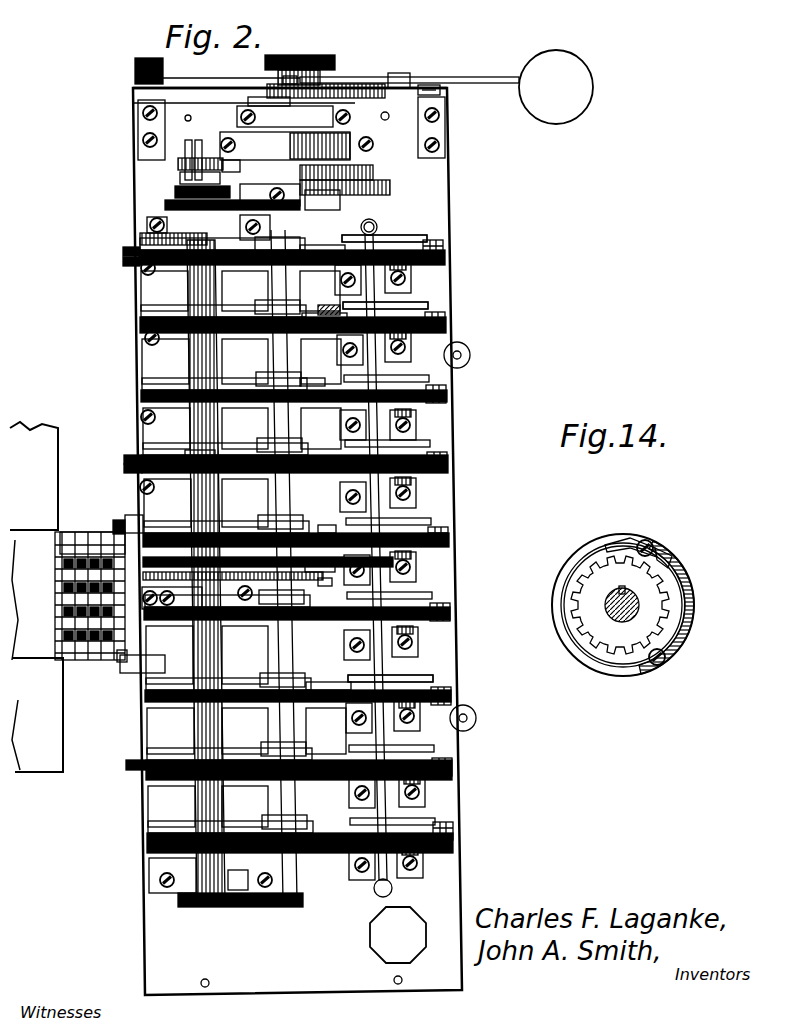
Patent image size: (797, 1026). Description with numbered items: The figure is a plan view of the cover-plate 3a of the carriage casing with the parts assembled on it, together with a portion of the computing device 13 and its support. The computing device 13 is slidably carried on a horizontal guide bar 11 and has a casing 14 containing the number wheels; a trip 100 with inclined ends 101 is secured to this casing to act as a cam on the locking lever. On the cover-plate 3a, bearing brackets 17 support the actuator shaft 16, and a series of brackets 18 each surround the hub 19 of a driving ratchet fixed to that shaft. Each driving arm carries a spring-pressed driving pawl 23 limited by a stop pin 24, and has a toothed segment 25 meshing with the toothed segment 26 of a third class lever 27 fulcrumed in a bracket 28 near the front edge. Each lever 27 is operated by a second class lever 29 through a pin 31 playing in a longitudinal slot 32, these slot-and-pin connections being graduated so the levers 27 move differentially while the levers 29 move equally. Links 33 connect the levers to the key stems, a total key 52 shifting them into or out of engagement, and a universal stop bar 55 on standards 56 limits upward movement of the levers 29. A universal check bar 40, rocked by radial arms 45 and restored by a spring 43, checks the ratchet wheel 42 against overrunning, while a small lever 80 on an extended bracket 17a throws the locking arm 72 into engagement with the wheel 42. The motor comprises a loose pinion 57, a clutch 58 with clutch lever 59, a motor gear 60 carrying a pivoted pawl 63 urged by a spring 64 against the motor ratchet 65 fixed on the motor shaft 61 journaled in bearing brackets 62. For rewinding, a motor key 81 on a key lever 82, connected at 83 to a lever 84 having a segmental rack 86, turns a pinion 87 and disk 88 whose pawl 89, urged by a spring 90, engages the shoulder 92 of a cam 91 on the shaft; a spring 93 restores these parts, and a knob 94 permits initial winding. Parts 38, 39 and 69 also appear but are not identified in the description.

In FIG. 2, the cover-plate 3a is at (447, 212).
In FIG. 2, the horizontal guide bar 11 is at (36, 597).
In FIG. 2, the computing device 13 is at (90, 532).
In FIG. 2, the casing 14 is at (73, 596).
In FIG. 2, the actuator shaft 16 is at (195, 152).
In FIG. 2, the bearing brackets 17 is at (168, 205).
In FIG. 2, the bracket 17a is at (322, 528).
In FIG. 2, the brackets 18 is at (141, 278).
In FIG. 2, the hub 19 is at (190, 272).
In FIG. 2, the driving pawl 23 is at (123, 250).
In FIG. 2, the stop pin 24 is at (123, 262).
In FIG. 2, the toothed segment 25 is at (262, 252).
In FIG. 2, the toothed segment 26 is at (293, 327).
In FIG. 2, the third class lever 27 is at (375, 250).
In FIG. 2, the bracket 28 is at (412, 265).
In FIG. 2, the second class lever 29 is at (415, 240).
In FIG. 2, the pin 31 is at (370, 222).
In FIG. 2, the longitudinal slot 32 is at (329, 301).
In FIG. 2, the links 33 is at (445, 250).
In FIG. 2, the bracket 38 is at (147, 228).
In FIG. 2, the ratchet 39 is at (150, 235).
In FIG. 2, the universal check bar 40 is at (290, 440).
In FIG. 2, the ratchet wheel 42 is at (172, 598).
In FIG. 2, the spring 43 is at (240, 226).
In FIG. 2, the arms 45 is at (262, 312).
In FIG. 2, the total key 52 is at (370, 938).
In FIG. 2, the universal stop bar 55 is at (383, 300).
In FIG. 2, the standards 56 is at (378, 228).
In FIG. 2, the loose pinion 57 is at (175, 192).
In FIG. 2, the clutch 58 is at (180, 178).
In FIG. 2, the clutch lever 59 is at (178, 163).
In FIG. 2, the motor gear 60 is at (390, 188).
In FIG. 2, the bearing brackets 62 is at (325, 210).
In FIG. 2, the pivoted pawl 63 is at (232, 165).
In FIG. 2, the spring 64 is at (373, 171).
In FIG. 2, the motor ratchet 65 is at (285, 146).
In FIG. 2, the screw 69 is at (270, 195).
In FIG. 2, the locking arm 72 is at (328, 586).
In FIG. 2, the small lever 80 is at (322, 569).
In FIG. 2, the motor key 81 is at (568, 58).
In FIG. 2, the key lever 82 is at (500, 77).
In FIG. 2, the connection 83 is at (432, 85).
In FIG. 2, the lever 84 is at (405, 73).
In FIG. 2, the segmental rack 86 is at (365, 84).
In FIG. 2, the pinion 87 is at (283, 80).
In FIG. 14, the pinion 87 is at (596, 612).
In FIG. 2, the disk 88 is at (250, 101).
In FIG. 14, the disk 88 is at (672, 644).
In FIG. 2, the pawl 89 is at (373, 117).
In FIG. 14, the pawl 89 is at (630, 543).
In FIG. 2, the spring 90 is at (240, 110).
In FIG. 14, the spring 90 is at (566, 580).
In FIG. 14, the cam 91 is at (686, 618).
In FIG. 14, the shoulder 92 is at (668, 556).
In FIG. 2, the spring 93 is at (170, 84).
In FIG. 2, the knob 94 is at (303, 56).
In FIG. 2, the trip 100 is at (115, 520).
In FIG. 2, the inclined ends 101 is at (128, 518).
In FIG. 14, the motor shaft 61 is at (615, 615).